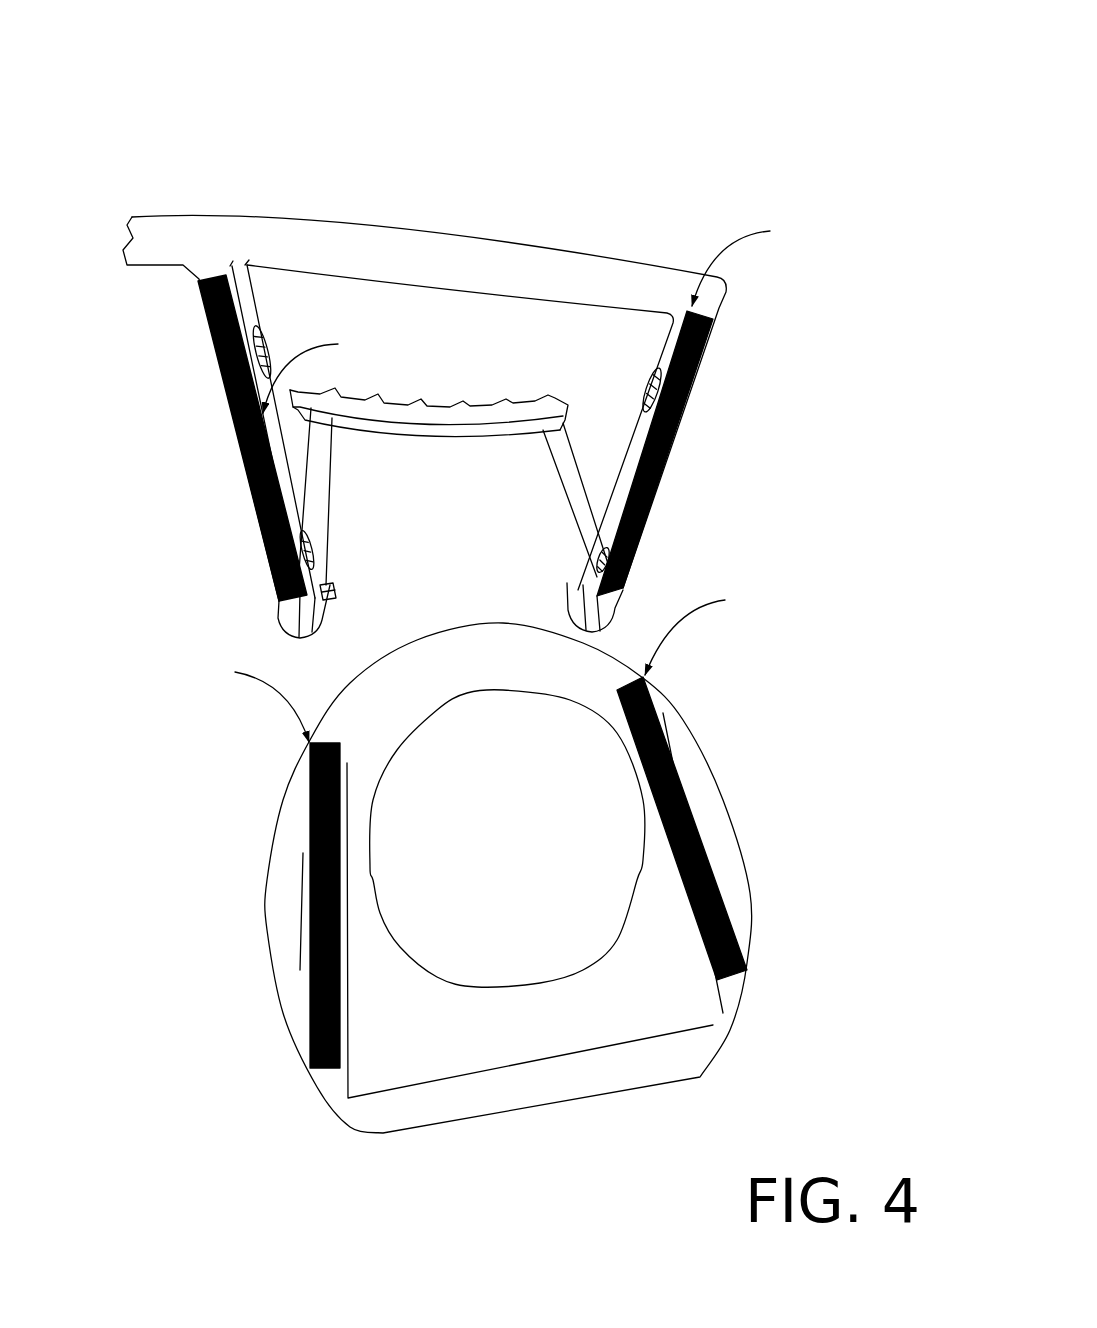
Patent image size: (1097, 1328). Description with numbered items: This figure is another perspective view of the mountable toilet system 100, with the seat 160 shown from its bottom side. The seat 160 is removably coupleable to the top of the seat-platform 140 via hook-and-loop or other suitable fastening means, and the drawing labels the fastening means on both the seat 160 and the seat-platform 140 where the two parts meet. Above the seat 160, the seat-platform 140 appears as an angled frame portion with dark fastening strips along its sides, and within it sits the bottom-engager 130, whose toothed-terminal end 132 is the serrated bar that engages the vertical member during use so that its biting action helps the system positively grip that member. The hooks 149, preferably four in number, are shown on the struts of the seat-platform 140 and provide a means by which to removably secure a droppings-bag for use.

The mountable toilet system 100 is at (669, 118).
The seat-platform 140 is at (664, 280).
The bottom-engager 130 is at (328, 468).
The toothed-terminal end 132 is at (518, 403).
The hooks 149 is at (268, 317).
The seat 160 is at (715, 775).